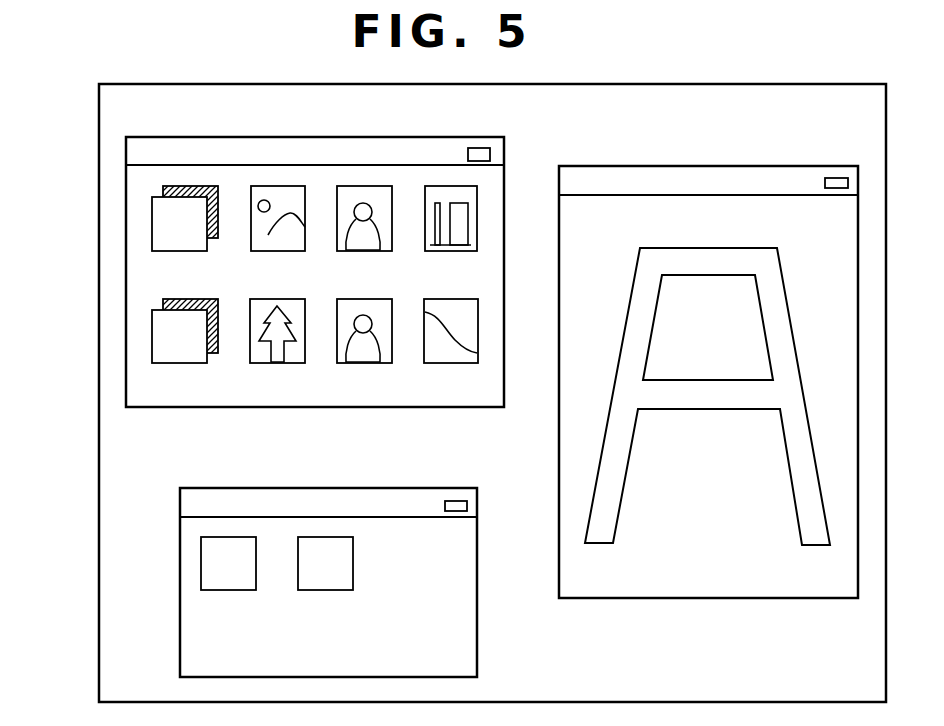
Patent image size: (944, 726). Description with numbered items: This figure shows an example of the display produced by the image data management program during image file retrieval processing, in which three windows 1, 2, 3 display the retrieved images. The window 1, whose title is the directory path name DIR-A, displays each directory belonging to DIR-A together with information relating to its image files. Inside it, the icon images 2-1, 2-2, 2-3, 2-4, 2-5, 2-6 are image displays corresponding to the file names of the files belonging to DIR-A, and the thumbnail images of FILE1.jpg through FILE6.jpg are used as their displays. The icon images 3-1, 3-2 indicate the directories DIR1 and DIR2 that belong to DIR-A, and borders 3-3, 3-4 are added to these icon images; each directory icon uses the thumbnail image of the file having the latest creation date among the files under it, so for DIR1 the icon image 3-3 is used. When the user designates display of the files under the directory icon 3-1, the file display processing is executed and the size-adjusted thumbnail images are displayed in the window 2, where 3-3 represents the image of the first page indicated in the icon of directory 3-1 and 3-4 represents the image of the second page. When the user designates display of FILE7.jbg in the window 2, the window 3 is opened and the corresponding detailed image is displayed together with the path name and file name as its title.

The window 1 is at (120, 136).
The window 2 is at (488, 641).
The window 3 is at (722, 608).
The icon image 2-1 is at (272, 186).
The icon image 2-2 is at (368, 186).
The icon image 2-3 is at (450, 186).
The icon image 2-4 is at (249, 340).
The icon image 2-5 is at (337, 338).
The icon image 2-6 is at (425, 338).
The icon image 3-1 is at (152, 227).
The icon image 3-2 is at (152, 341).
The border 3-3 is at (186, 183).
The border 3-4 is at (150, 297).